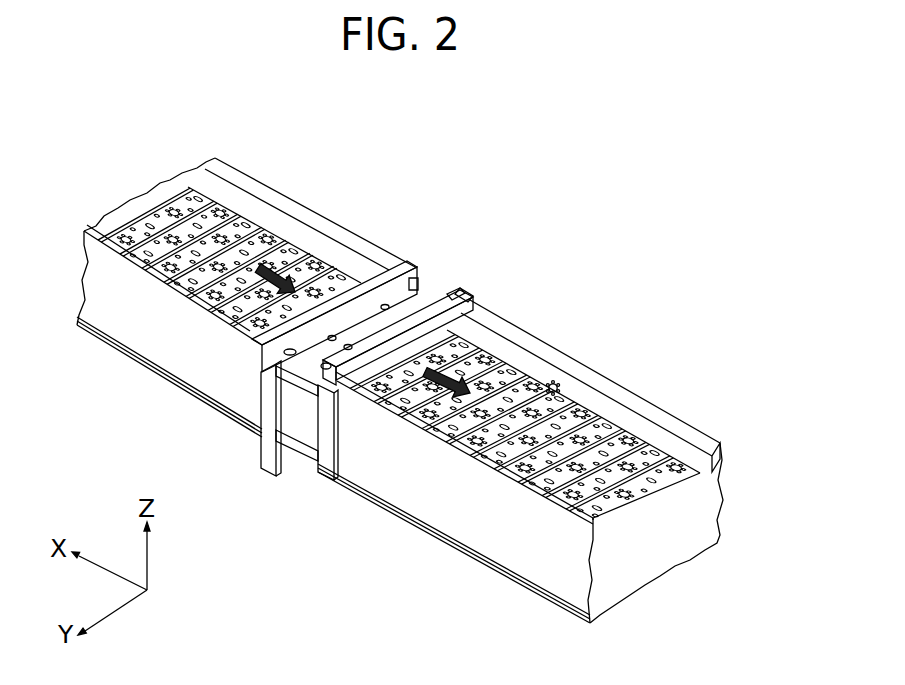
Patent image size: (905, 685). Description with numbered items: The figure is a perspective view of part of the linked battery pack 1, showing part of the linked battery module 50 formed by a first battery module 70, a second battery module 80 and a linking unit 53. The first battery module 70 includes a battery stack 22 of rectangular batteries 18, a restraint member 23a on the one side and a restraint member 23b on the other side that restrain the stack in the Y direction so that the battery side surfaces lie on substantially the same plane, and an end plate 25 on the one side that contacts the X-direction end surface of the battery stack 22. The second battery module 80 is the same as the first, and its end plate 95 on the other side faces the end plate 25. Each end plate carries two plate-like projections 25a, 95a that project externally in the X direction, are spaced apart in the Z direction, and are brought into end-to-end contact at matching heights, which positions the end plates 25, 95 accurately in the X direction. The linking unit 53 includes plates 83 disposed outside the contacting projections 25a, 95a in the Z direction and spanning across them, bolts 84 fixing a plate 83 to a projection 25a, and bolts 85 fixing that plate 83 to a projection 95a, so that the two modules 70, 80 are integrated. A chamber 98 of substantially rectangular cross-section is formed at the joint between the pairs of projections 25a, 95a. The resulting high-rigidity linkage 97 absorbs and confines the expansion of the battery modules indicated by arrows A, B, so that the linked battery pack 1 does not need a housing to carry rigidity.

The linked battery pack 1 is at (573, 252).
The rectangular battery 18 is at (653, 443).
The battery stack 22 is at (556, 384).
The restraint member on the one side 23a is at (445, 507).
The restraint member on the other side 23b is at (667, 413).
The end plate on the one side 25 is at (363, 430).
The projection 25a is at (303, 457).
The linked battery module 50 is at (592, 298).
The linking unit 53 is at (425, 293).
The first battery module 70 is at (630, 390).
The second battery module 80 is at (295, 200).
The plate 83 is at (428, 296).
The bolt 84 is at (475, 305).
The bolt 85 is at (267, 328).
The end plate on the other side 95 is at (360, 290).
The projection 95a is at (273, 443).
The linkage 97 is at (433, 255).
The chamber 98 is at (300, 413).
The arrow A is at (503, 350).
The arrow B is at (296, 290).